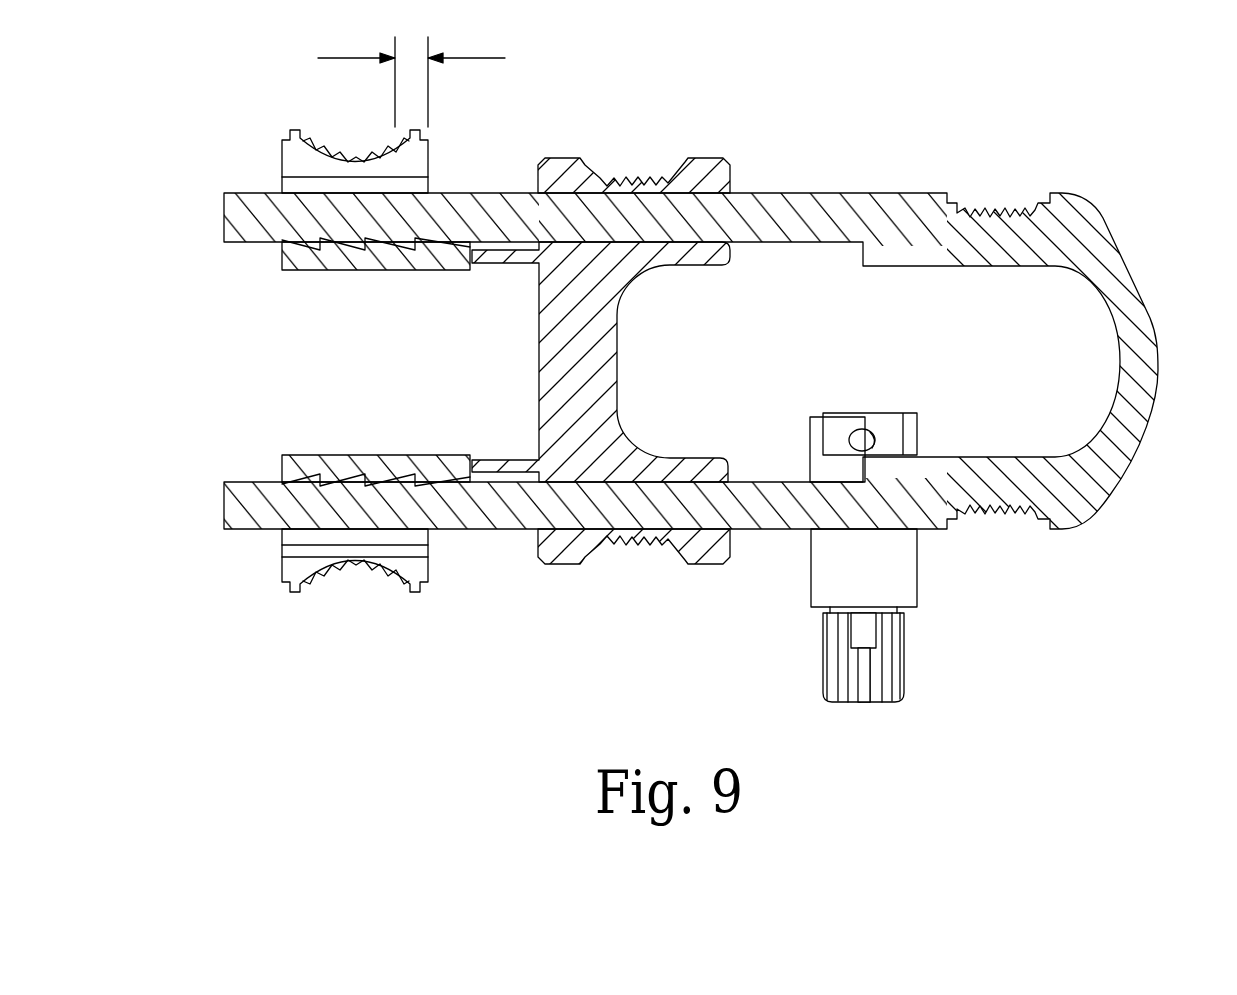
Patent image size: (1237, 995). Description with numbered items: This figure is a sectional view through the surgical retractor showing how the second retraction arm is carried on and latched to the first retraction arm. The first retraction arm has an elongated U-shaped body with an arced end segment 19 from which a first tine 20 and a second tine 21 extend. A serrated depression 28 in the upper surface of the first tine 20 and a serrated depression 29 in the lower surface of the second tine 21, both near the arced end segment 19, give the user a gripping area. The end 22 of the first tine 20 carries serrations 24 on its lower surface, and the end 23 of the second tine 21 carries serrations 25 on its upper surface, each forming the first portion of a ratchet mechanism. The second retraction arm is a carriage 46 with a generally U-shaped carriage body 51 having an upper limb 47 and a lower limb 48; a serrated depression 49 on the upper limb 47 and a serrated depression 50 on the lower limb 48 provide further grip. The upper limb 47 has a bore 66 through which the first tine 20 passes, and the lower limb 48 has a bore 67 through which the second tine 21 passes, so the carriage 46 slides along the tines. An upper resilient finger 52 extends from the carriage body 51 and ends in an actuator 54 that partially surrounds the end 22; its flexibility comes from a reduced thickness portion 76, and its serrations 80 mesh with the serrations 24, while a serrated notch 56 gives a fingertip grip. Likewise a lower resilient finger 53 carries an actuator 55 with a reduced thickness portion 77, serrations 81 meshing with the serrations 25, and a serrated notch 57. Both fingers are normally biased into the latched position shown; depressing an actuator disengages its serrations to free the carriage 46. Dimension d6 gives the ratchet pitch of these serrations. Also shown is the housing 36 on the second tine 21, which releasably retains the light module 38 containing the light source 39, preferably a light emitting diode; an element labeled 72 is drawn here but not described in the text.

The arced end segment 19 is at (1148, 345).
The first tine 20 is at (800, 197).
The second tine 21 is at (790, 533).
The end of the first tine 22 is at (224, 218).
The end of the second tine 23 is at (224, 508).
The serrations 24 is at (300, 245).
The serrations 25 is at (300, 478).
The depression 28 is at (1012, 208).
The depression 29 is at (1012, 516).
The housing 36 is at (917, 566).
The light module 38 is at (896, 660).
The light source 39 is at (862, 428).
The carriage 46 is at (619, 363).
The upper limb 47 is at (712, 160).
The lower limb 48 is at (565, 565).
The depression 49 is at (612, 174).
The depression 50 is at (633, 550).
The carriage body 51 is at (539, 353).
The upper resilient finger 52 is at (510, 240).
The lower resilient finger 53 is at (508, 490).
The actuator 54 is at (386, 140).
The actuator 55 is at (323, 583).
The serrated notch 56 is at (345, 150).
The serrated notch 57 is at (348, 575).
The bore 66 is at (740, 232).
The bore 67 is at (745, 484).
The valve seat 72 is at (889, 418).
The reduced thickness portion 76 is at (505, 260).
The reduced thickness portion 77 is at (505, 466).
The actuator serrations 80 is at (362, 236).
The actuator serrations 81 is at (362, 486).
The ratchet pitch dimension d6 is at (411, 82).